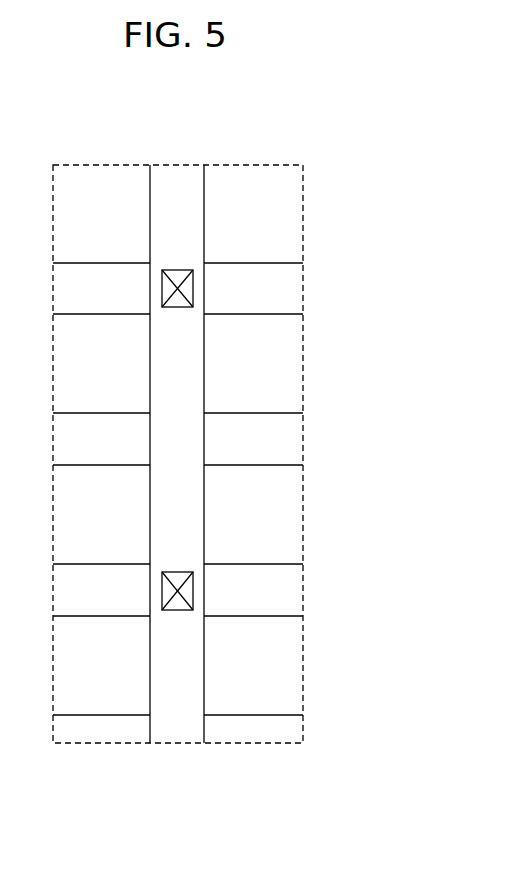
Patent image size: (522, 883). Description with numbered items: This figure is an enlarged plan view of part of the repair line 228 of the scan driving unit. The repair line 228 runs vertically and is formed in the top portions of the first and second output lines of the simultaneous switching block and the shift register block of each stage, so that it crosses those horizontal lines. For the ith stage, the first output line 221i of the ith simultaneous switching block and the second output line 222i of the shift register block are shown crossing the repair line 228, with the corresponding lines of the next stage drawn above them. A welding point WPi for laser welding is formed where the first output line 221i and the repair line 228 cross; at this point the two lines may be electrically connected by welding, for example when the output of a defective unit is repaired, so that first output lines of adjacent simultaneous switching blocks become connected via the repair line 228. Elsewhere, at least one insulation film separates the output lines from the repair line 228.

The repair line 228 is at (190, 364).
The first output line of the ith simultaneous switching block 221i is at (288, 592).
The second output line of the ith stage 222i is at (288, 732).
The welding point of the ith stage WPi is at (177, 572).